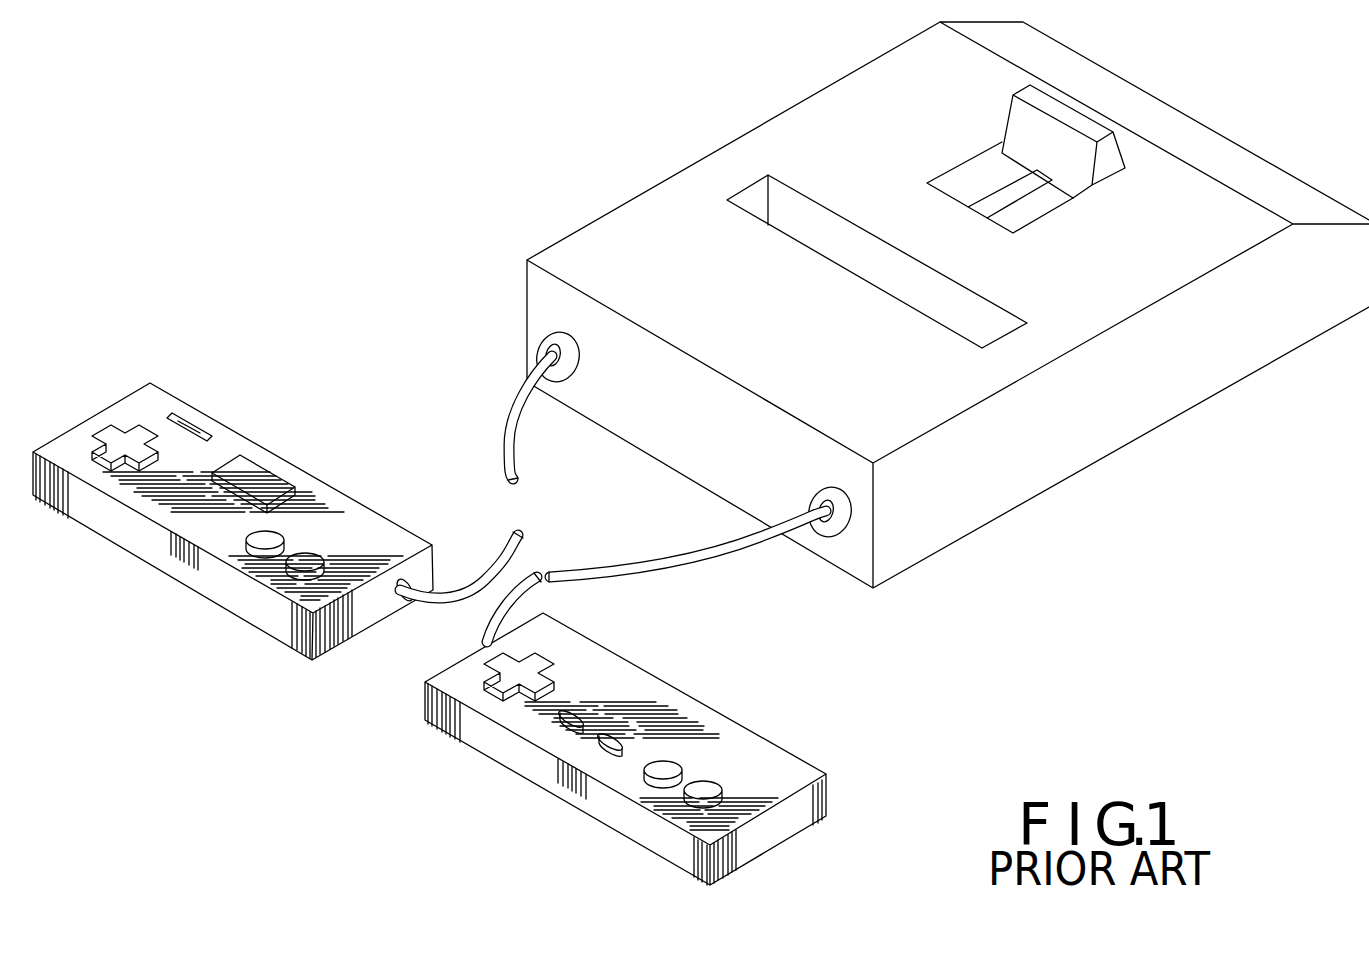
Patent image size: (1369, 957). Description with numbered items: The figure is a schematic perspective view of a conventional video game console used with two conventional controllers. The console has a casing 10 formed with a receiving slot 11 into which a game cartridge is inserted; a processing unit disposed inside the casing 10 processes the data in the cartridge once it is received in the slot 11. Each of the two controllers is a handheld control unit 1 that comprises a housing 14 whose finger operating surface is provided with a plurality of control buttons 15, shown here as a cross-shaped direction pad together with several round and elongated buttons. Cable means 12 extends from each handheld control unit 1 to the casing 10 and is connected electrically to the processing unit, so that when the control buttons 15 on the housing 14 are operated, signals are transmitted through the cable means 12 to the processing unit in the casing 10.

The handheld control unit 1 is at (617, 729).
The casing 10 is at (972, 518).
The receiving slot 11 is at (750, 203).
The cable means 12 is at (697, 565).
The housing 14 is at (682, 705).
The control buttons 15 is at (490, 688).